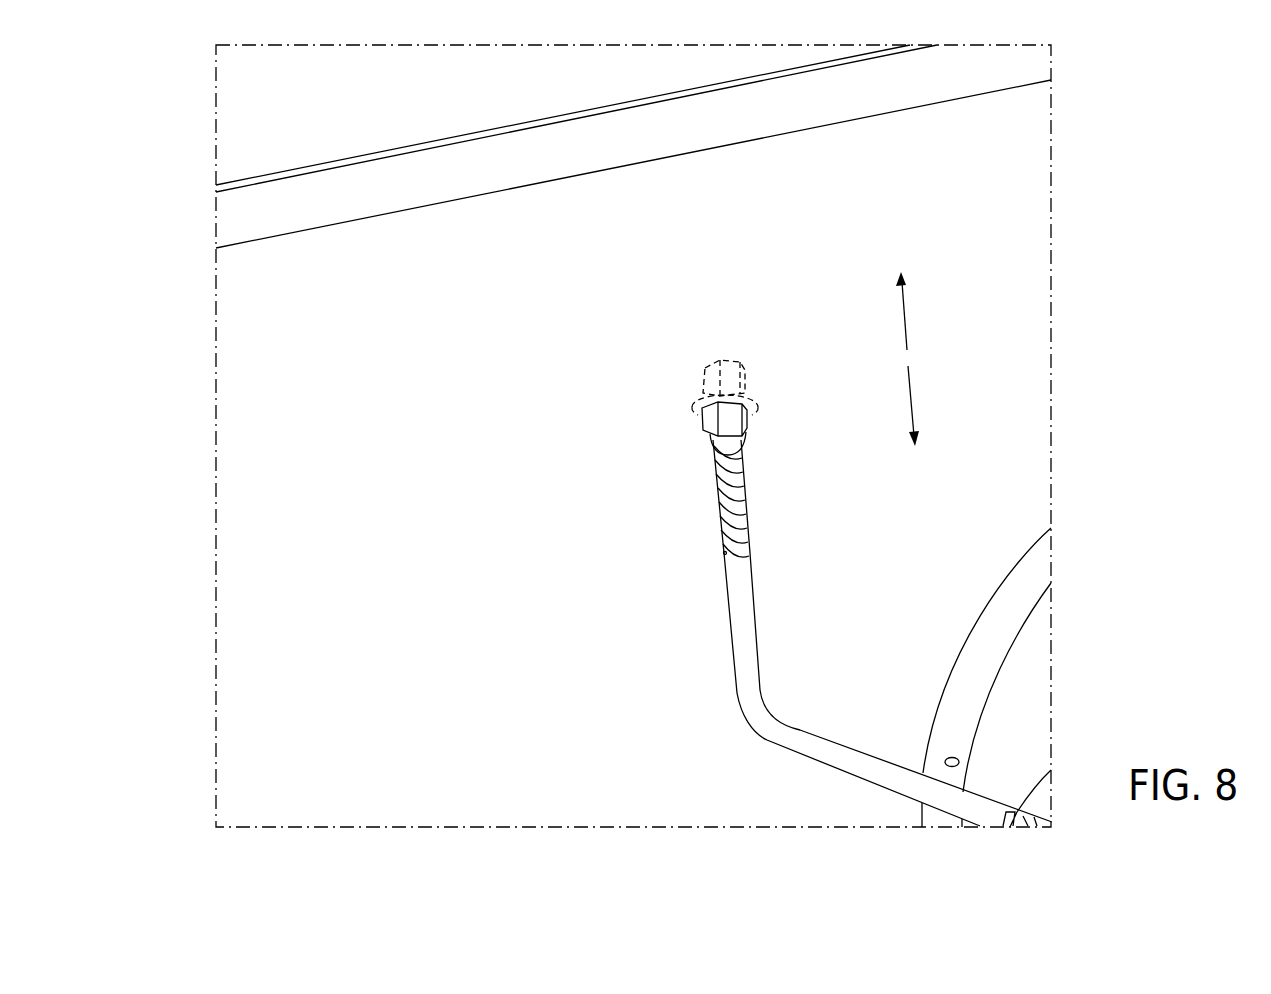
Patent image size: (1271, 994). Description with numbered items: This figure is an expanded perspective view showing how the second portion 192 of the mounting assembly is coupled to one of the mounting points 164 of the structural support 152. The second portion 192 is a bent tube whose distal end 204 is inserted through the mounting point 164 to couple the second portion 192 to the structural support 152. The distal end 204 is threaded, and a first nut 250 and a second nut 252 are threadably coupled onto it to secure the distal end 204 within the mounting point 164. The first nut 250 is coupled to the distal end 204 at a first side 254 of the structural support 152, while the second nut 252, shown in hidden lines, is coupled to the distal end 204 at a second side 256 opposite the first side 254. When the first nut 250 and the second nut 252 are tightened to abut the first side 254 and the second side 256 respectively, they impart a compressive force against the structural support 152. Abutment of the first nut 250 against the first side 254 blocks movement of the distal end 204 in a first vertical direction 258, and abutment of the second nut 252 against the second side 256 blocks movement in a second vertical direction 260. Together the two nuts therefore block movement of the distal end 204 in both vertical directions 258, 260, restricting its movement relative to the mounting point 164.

The structural support 152 is at (236, 632).
The mounting point 164 is at (702, 435).
The second portion 192 is at (756, 706).
The distal end 204 is at (718, 481).
The first nut 250 is at (733, 417).
The second nut 252 is at (720, 362).
The first side 254 is at (1030, 469).
The second side 256 is at (1084, 93).
The first vertical direction 258 is at (906, 318).
The second vertical direction 260 is at (912, 400).